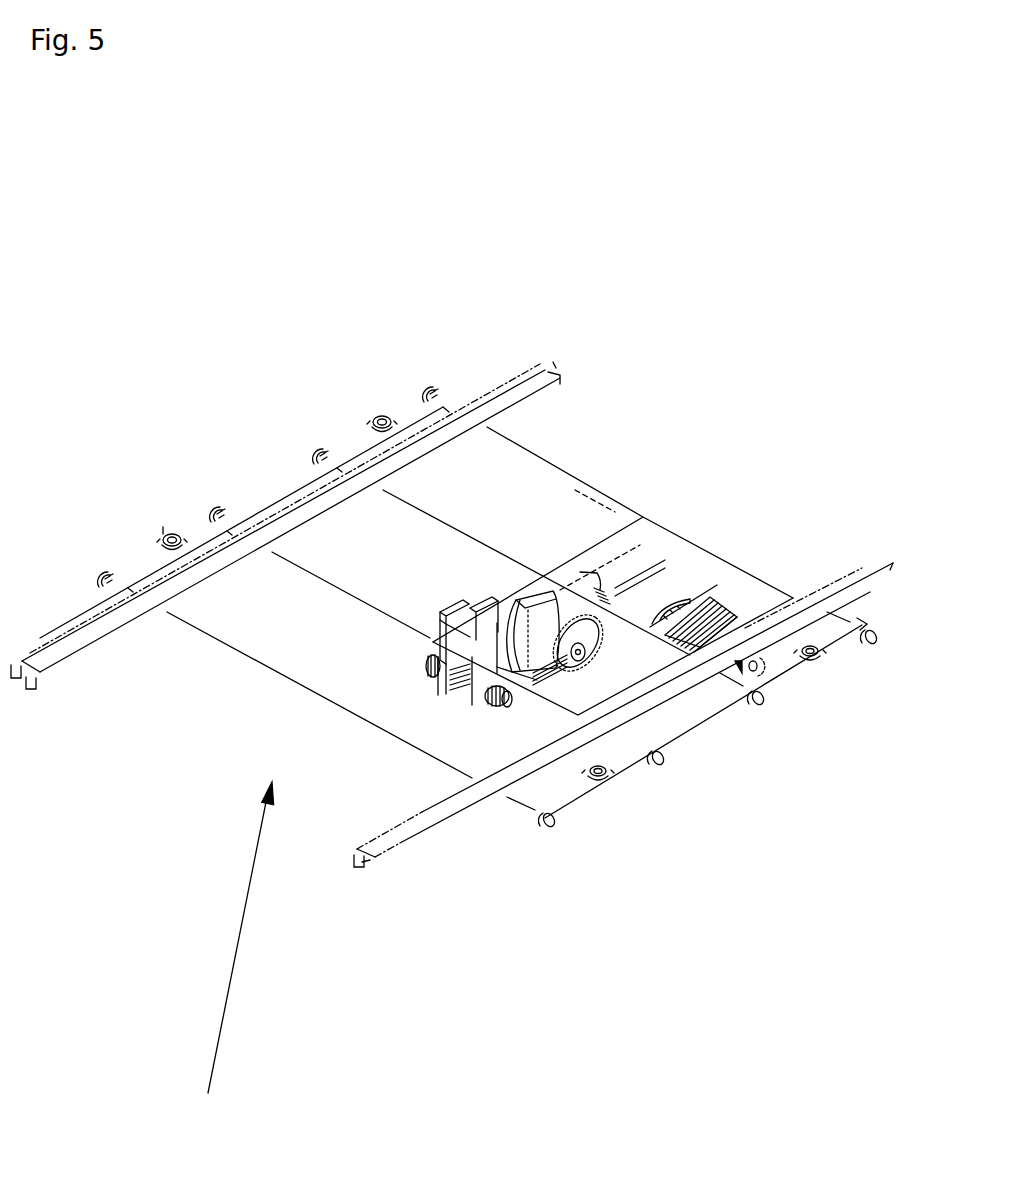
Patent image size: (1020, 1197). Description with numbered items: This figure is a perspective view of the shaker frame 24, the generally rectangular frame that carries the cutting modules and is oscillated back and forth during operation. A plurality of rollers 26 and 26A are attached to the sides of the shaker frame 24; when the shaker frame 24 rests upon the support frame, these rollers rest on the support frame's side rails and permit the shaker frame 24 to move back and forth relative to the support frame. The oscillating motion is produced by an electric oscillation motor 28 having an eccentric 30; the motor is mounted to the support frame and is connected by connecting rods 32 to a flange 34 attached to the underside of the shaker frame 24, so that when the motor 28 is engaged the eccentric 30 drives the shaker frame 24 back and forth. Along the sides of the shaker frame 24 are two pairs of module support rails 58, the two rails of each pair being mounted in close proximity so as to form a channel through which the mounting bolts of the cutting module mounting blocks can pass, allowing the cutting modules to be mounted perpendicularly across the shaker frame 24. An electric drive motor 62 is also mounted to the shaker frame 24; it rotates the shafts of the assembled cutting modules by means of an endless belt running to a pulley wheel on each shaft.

The shaker frame 24 is at (236, 953).
The rollers 26 is at (106, 572).
The rollers 26A is at (172, 524).
The electric oscillation motor 28 is at (628, 566).
The eccentric 30 is at (580, 660).
The connecting rods 32 is at (537, 673).
The flange 34 is at (435, 656).
The module support rails 58 is at (561, 377).
The electric drive motor 62 is at (722, 622).